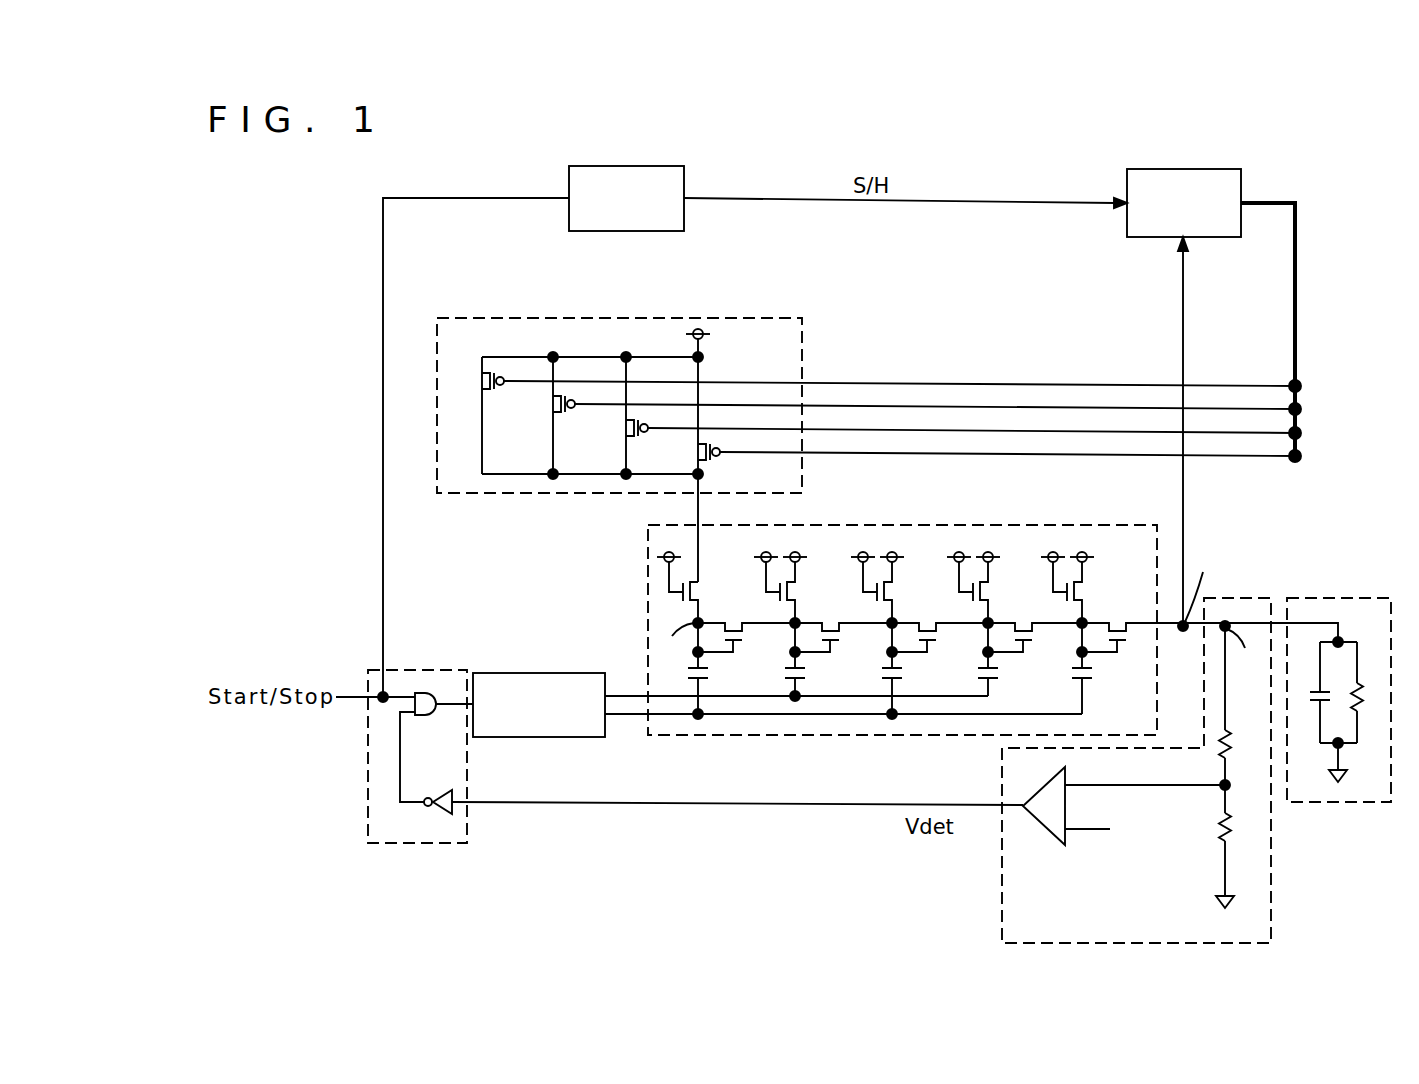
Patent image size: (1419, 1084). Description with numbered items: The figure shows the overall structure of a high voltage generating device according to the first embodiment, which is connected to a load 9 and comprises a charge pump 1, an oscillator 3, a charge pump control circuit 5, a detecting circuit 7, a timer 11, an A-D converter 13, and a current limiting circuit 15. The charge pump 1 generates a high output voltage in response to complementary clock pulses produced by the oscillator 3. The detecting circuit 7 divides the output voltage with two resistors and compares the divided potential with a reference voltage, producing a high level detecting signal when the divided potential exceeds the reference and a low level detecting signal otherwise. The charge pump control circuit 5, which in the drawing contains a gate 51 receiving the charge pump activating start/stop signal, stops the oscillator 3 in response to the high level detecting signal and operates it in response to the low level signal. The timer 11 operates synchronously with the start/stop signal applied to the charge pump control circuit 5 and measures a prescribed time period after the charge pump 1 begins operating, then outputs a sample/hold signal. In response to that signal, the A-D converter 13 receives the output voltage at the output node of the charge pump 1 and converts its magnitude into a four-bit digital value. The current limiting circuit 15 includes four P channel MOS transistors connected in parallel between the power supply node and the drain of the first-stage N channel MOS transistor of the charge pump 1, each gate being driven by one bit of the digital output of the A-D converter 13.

The charge pump 1 is at (645, 570).
The oscillator 3 is at (562, 673).
The charge pump control circuit 5 is at (420, 729).
The NAND gate 51 is at (432, 718).
The detecting circuit 7 is at (1243, 592).
The load 9 is at (1352, 592).
The timer 11 is at (653, 165).
The A-D converter 13 is at (1205, 172).
The current limiting circuit 15 is at (741, 318).